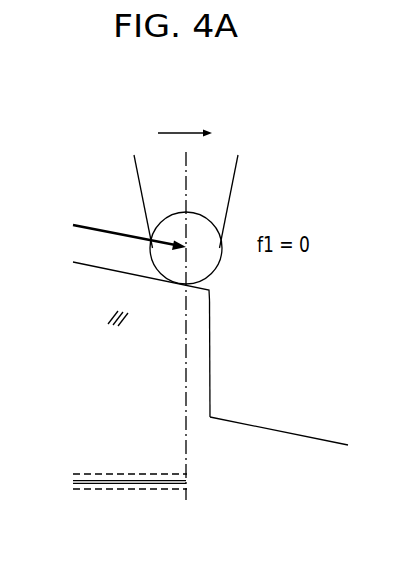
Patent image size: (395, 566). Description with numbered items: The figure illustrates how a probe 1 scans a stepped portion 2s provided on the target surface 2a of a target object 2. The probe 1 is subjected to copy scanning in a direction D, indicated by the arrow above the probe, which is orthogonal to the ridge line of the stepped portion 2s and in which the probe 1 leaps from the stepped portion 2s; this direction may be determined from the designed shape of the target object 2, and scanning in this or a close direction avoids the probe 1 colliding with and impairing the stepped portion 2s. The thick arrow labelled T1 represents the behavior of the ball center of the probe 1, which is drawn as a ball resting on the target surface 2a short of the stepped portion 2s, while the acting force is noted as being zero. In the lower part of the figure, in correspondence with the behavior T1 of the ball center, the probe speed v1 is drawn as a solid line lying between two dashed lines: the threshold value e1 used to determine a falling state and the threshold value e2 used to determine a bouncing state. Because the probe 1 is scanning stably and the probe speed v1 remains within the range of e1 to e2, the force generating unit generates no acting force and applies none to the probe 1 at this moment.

The probe 1 is at (146, 183).
The direction D is at (185, 120).
The behavior of the ball center T1 is at (100, 232).
The target surface 2a is at (100, 268).
The target object 2 is at (103, 335).
The stepped portion 2s is at (210, 385).
The threshold value used to determine a bouncing state e2 is at (97, 473).
The probe speed v1 is at (73, 482).
The threshold value used to determine a falling state e1 is at (97, 489).